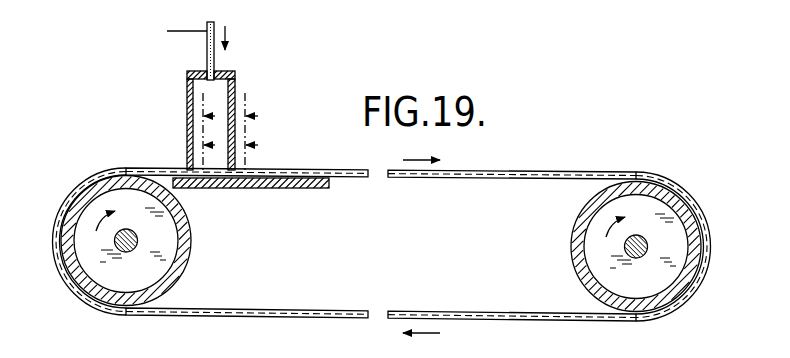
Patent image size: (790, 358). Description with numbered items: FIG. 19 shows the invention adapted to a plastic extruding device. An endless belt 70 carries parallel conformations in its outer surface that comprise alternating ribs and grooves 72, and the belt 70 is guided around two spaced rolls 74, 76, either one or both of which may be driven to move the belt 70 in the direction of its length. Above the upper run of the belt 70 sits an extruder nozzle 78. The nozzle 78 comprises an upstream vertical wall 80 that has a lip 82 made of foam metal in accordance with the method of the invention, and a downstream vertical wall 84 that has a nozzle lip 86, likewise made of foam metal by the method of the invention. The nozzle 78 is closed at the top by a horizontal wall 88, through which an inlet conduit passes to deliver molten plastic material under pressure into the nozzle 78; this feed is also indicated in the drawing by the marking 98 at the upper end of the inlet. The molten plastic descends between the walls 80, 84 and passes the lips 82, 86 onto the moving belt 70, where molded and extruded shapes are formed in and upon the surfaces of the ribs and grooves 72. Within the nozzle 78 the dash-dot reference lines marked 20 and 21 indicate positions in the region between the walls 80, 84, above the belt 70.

The strip 20 is at (215, 132).
The strip 21 is at (257, 132).
The endless belt 70 is at (289, 307).
The ribs and grooves 72 is at (467, 317).
The roll 74 is at (62, 246).
The roll 76 is at (699, 255).
The extruder nozzle 78 is at (211, 115).
The upstream vertical wall 80 is at (187, 108).
The lip 82 is at (187, 163).
The downstream vertical wall 84 is at (235, 128).
The nozzle lip 86 is at (230, 170).
The horizontal wall 88 is at (187, 72).
The molten plastic feed tube 98 is at (208, 22).